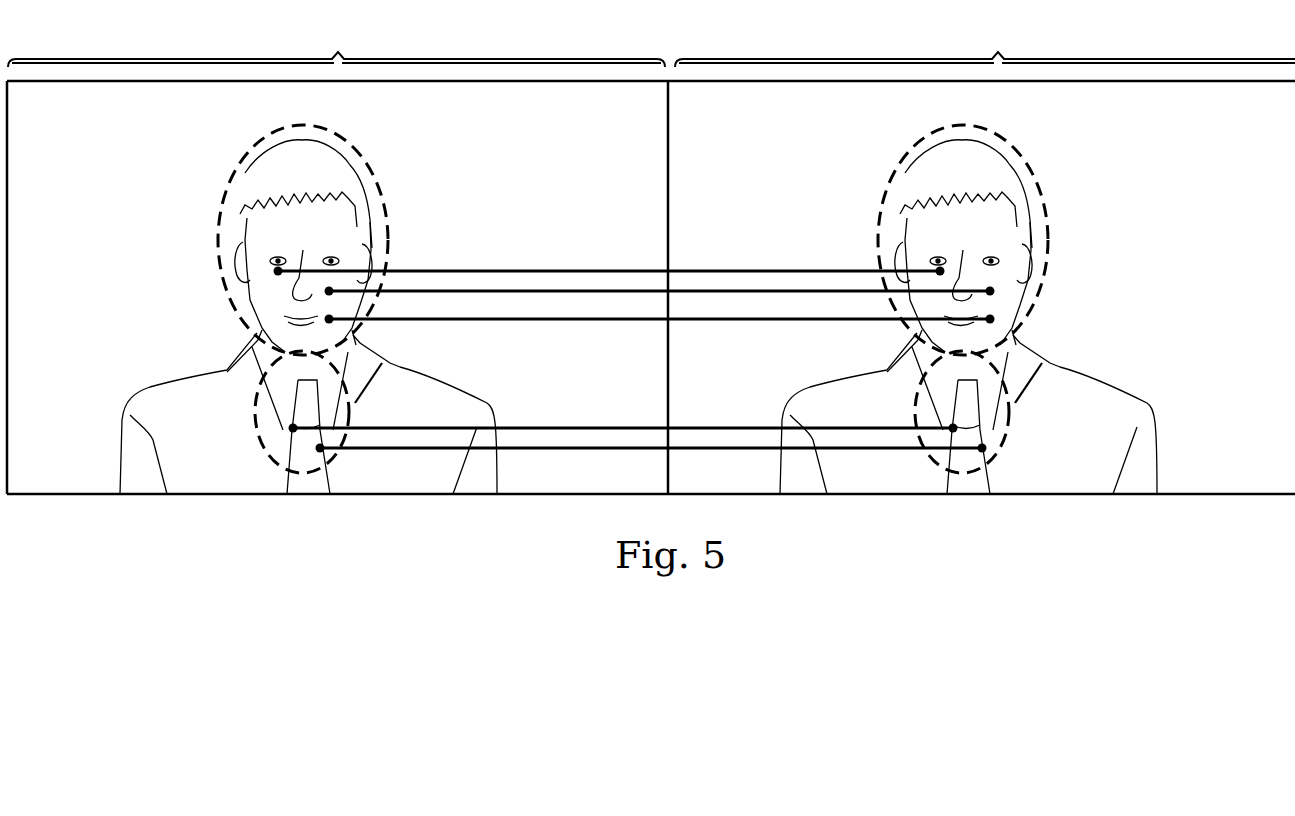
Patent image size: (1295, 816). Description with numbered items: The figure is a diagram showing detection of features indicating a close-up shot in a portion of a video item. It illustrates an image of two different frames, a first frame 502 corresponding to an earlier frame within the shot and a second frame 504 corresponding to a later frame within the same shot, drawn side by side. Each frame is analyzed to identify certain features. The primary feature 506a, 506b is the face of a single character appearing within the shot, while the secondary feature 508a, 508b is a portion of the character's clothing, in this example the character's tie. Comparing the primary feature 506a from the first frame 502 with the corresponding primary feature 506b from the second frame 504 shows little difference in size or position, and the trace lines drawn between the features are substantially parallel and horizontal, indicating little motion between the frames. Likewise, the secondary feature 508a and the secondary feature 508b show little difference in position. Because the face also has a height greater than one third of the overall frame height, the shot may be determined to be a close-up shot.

The first frame 502 is at (336, 45).
The second frame 504 is at (985, 45).
The primary feature 506a is at (226, 213).
The primary feature 506b is at (1038, 184).
The secondary feature 508a is at (258, 437).
The secondary feature 508b is at (1007, 439).